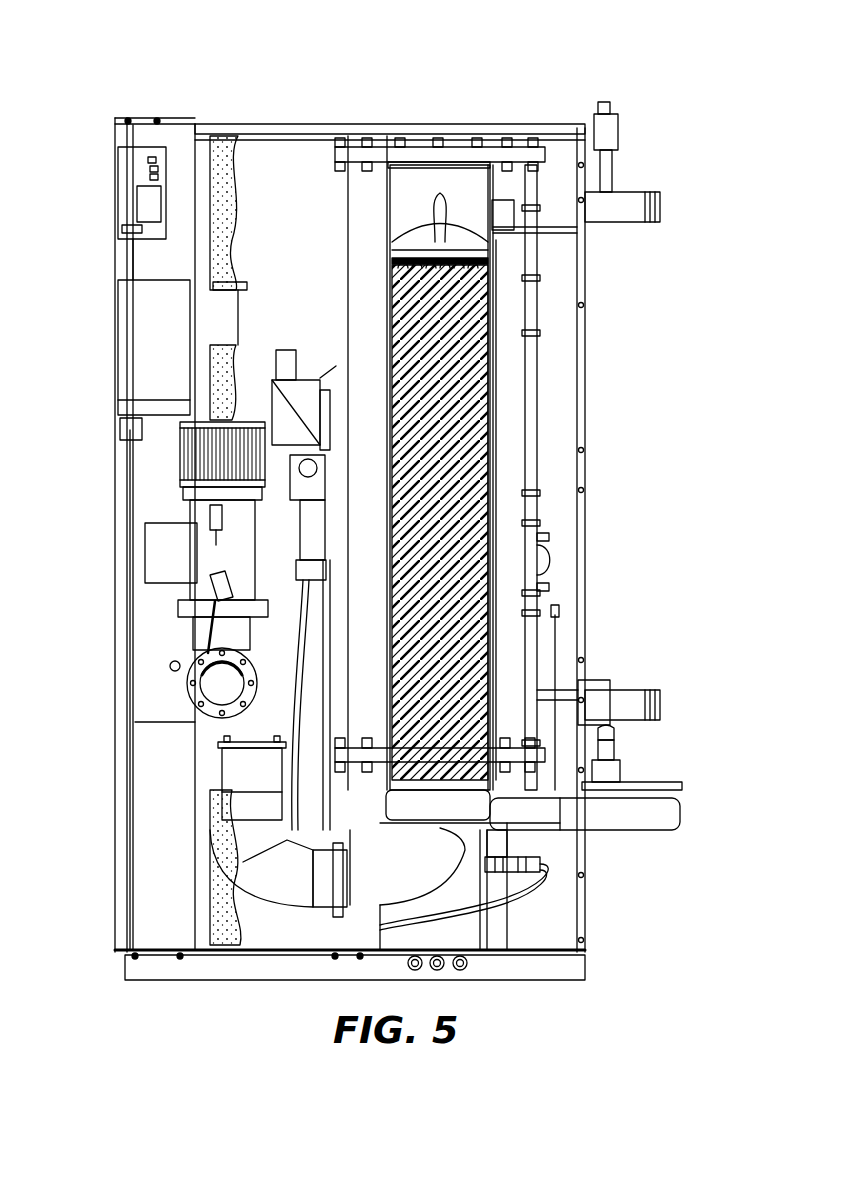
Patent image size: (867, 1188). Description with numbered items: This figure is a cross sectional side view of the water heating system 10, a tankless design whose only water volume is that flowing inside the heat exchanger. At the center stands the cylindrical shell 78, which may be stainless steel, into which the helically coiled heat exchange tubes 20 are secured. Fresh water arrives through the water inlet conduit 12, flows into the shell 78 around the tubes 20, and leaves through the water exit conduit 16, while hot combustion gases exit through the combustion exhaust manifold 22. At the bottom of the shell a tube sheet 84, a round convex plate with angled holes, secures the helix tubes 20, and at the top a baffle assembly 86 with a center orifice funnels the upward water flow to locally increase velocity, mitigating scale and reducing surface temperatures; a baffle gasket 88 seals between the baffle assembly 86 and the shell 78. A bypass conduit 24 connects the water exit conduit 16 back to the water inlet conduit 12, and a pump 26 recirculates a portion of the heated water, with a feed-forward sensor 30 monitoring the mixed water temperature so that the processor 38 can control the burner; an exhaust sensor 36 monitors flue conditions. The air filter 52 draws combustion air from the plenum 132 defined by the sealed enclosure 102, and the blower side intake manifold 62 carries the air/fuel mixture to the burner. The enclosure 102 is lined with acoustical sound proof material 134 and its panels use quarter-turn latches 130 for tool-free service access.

The water heating system 10 is at (338, 53).
The water inlet conduit 12 is at (655, 700).
The water exit conduit 16 is at (636, 192).
The heat exchange tubes 20 is at (548, 290).
The combustion exhaust manifold 22 is at (667, 805).
The bypass conduit 24 is at (535, 360).
The pump 26 is at (547, 556).
The feed-forward sensor 30 is at (547, 700).
The exhaust sensor 36 is at (572, 795).
The processor 38 is at (130, 325).
The air filter 52 is at (180, 462).
The blower side intake manifold 62 is at (462, 862).
The cylindrical shell 78 is at (490, 388).
The tube sheet 84 is at (510, 832).
The baffle assembly 86 is at (388, 262).
The baffle gasket 88 is at (460, 257).
The enclosure 102 is at (130, 692).
The quarter-turn latches 130 is at (238, 280).
The plenum 132 is at (312, 294).
The acoustical sound proof material 134 is at (262, 150).